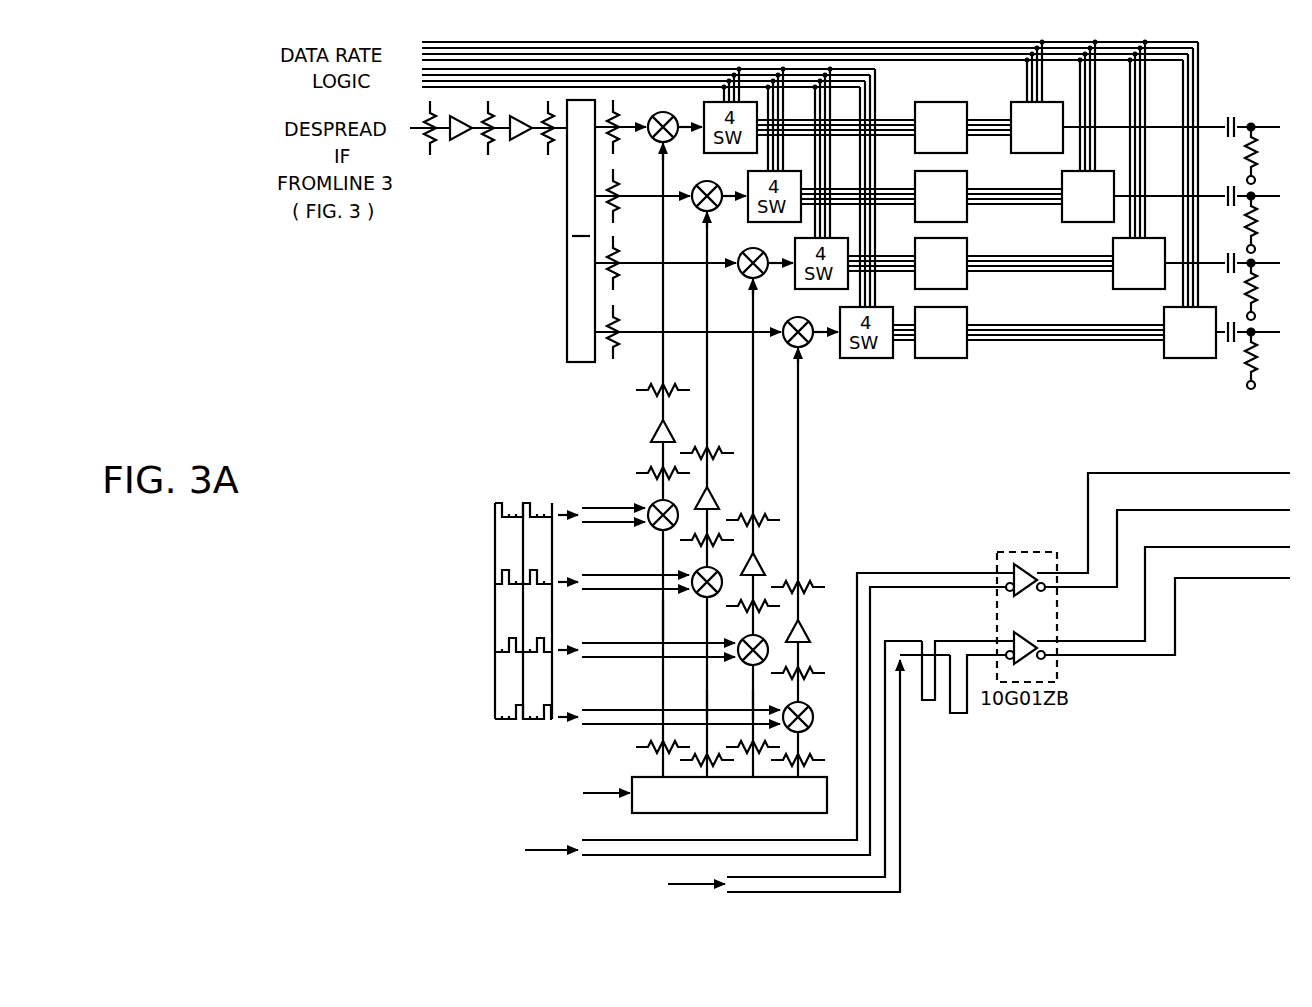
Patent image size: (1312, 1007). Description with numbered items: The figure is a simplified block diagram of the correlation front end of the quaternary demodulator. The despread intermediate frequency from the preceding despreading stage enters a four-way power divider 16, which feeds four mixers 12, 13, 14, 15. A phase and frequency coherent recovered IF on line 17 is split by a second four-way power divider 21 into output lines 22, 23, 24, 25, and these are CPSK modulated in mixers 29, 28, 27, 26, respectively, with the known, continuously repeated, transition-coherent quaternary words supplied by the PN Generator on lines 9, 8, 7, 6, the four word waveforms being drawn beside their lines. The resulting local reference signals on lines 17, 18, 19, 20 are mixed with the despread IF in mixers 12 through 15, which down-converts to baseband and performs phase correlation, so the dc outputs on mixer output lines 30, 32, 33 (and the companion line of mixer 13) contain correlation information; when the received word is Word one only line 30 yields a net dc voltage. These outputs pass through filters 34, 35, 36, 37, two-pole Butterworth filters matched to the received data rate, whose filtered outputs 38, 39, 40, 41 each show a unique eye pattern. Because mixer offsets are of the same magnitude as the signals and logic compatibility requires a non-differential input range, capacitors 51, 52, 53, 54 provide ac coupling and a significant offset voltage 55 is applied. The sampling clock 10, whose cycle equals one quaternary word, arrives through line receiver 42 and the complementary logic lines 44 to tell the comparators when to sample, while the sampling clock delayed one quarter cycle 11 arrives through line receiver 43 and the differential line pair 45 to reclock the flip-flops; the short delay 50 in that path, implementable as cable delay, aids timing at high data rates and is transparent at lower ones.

The 4-ary word line (Word 1) 6 is at (461, 511).
The 4-ary word line (Word 2) 7 is at (483, 578).
The 4-ary word line (Word 3) 8 is at (506, 643).
The 4-ary word line (Word 4) 9 is at (529, 710).
The sampling clock 10 is at (643, 717).
The sampling clock delayed one quarter cycle 11 is at (611, 768).
The mixer 12 is at (663, 148).
The mixer 13 is at (707, 216).
The mixer 14 is at (753, 283).
The mixer 15 is at (798, 351).
The four-way power divider 16 is at (567, 233).
The recovered IF line 17 is at (660, 372).
The local signal line 18 is at (706, 432).
The local signal line 19 is at (753, 432).
The local signal line 20 is at (798, 432).
The four-way power divider 21 is at (640, 776).
The power divider output line 22 is at (803, 752).
The power divider output line 23 is at (752, 701).
The power divider output line 24 is at (706, 701).
The power divider output line 25 is at (660, 626).
The mixer 26 is at (652, 503).
The mixer 27 is at (699, 574).
The mixer 28 is at (745, 641).
The mixer 29 is at (807, 706).
The mixer output line 30 is at (688, 116).
The mixer output line 32 is at (778, 252).
The mixer output line 33 is at (823, 321).
The matched filter 34 is at (918, 103).
The matched filter 35 is at (918, 172).
The matched filter 36 is at (918, 239).
The matched filter 37 is at (918, 307).
The integrated output line 38 is at (1070, 150).
The integrated output line 39 is at (1120, 219).
The integrated output line 40 is at (1171, 286).
The integrated output line 41 is at (1222, 355).
The line receiver 42 is at (1030, 562).
The line receiver 43 is at (1040, 637).
The complementary logic lines 44 is at (1114, 516).
The differential line pair 45 is at (1152, 618).
The short delay 50 is at (932, 706).
The capacitor 51 is at (1228, 119).
The capacitor 52 is at (1228, 188).
The capacitor 53 is at (1228, 255).
The capacitor 54 is at (1228, 324).
The offset voltage 55 is at (1212, 406).